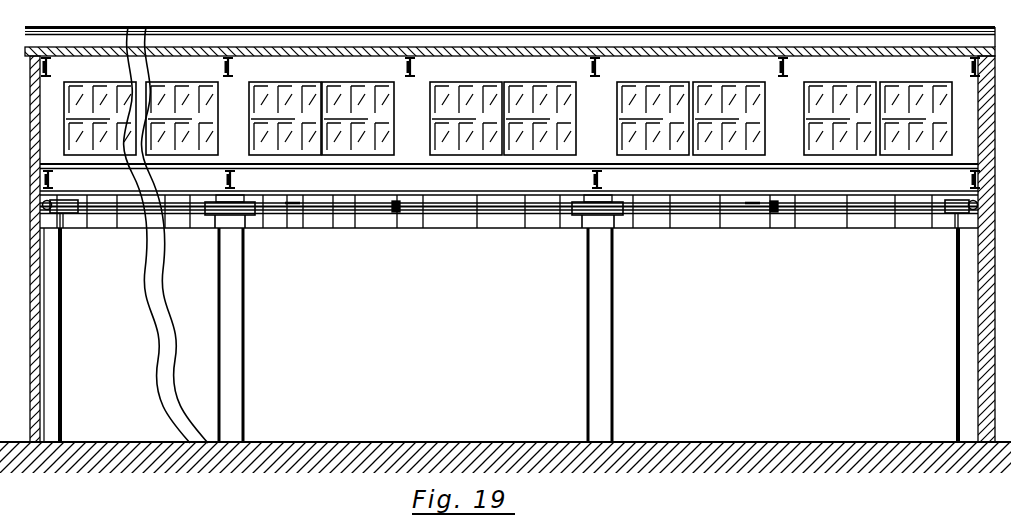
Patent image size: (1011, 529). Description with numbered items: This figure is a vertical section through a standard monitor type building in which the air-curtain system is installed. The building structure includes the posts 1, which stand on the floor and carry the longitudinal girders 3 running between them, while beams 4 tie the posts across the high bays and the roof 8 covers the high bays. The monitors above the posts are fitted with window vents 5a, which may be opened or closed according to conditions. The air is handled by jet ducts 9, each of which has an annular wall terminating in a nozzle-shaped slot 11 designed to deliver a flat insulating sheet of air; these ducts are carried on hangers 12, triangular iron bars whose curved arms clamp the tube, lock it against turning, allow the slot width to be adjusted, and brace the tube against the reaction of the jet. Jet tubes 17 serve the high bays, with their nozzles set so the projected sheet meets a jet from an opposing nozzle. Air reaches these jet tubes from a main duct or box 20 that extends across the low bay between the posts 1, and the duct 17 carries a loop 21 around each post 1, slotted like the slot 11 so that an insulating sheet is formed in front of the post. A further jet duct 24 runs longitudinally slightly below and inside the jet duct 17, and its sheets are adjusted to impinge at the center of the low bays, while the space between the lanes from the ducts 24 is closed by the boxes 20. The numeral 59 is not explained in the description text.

The posts 1 is at (60, 352).
The longitudinal girders 3 is at (562, 172).
The beams 4 is at (55, 180).
The window vents 5a is at (167, 84).
The roof 8 is at (352, 46).
The ducts 9 is at (450, 210).
The nozzle-shaped slot 11 is at (45, 212).
The hangers 12 is at (364, 196).
The jet tubes 17 is at (88, 200).
The main duct 20 is at (216, 216).
The loop 21 is at (205, 213).
The jet duct 24 is at (108, 229).
The column stub 59 is at (61, 231).